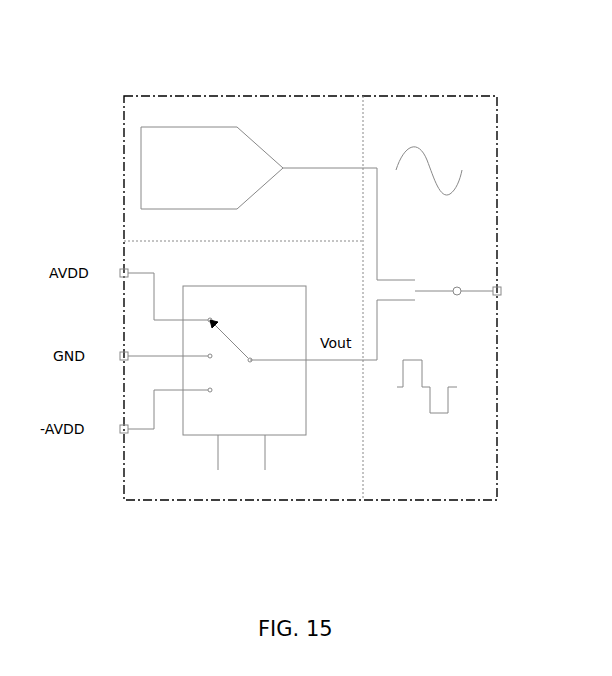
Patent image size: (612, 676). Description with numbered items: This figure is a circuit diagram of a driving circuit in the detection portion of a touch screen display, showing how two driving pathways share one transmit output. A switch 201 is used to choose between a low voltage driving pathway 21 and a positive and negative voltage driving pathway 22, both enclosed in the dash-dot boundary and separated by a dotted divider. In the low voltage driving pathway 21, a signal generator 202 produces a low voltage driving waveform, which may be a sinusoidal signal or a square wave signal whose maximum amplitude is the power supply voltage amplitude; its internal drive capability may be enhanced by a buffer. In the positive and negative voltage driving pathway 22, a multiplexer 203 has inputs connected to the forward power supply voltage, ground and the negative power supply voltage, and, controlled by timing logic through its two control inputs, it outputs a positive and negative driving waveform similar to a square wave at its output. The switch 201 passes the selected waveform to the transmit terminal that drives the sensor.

The low voltage driving pathway 21 is at (188, 96).
The positive and negative voltage driving pathway 22 is at (172, 502).
The switch 201 is at (438, 291).
The signal generator 202 is at (141, 155).
The multiplexer 203 is at (287, 420).